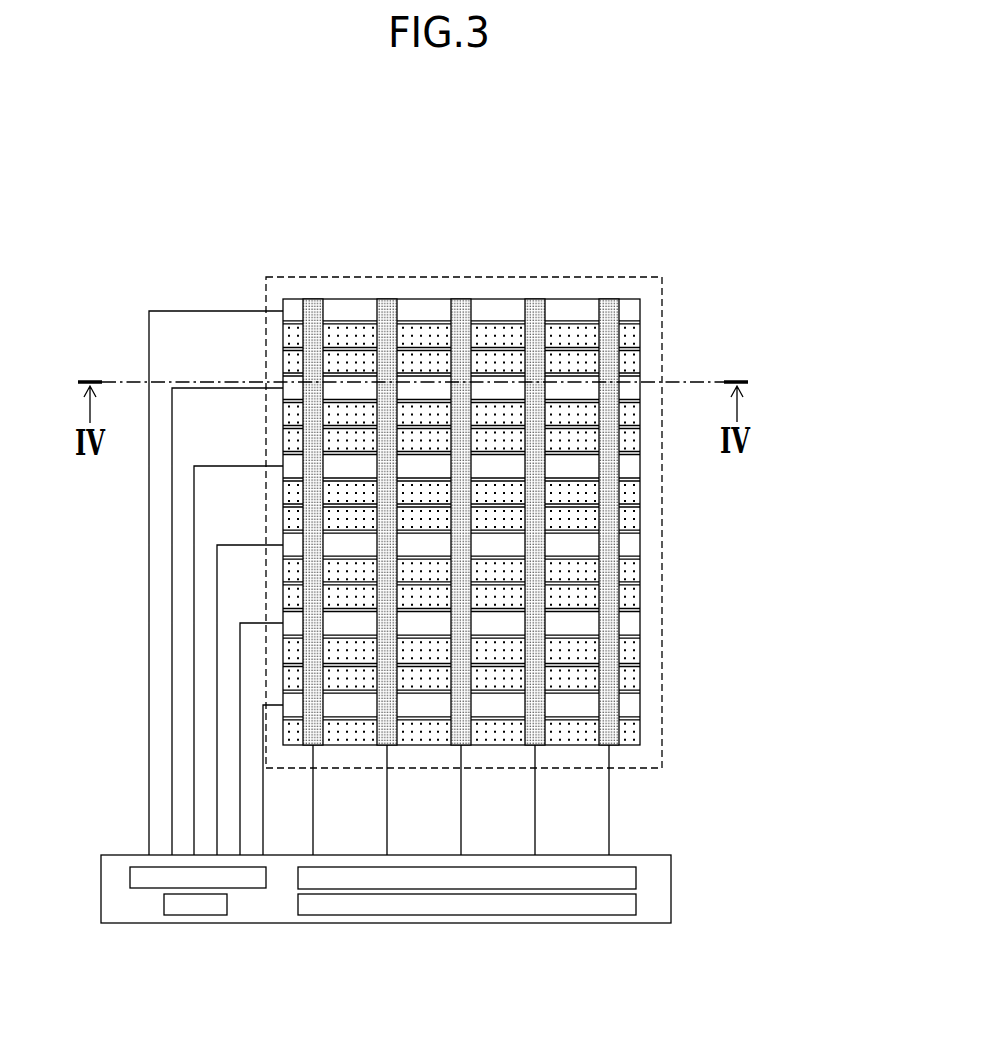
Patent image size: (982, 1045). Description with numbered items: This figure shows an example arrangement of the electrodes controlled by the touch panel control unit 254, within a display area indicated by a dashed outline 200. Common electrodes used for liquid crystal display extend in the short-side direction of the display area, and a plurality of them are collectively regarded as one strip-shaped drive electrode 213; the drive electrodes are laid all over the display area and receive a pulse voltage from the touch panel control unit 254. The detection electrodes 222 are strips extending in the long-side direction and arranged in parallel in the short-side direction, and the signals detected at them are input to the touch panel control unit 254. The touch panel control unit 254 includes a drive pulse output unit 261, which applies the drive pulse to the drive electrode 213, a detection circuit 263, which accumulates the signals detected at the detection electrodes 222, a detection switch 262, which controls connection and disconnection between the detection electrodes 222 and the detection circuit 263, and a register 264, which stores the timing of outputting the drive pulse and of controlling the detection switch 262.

The display device 200 is at (543, 277).
The drive electrode 213 is at (632, 310).
The detection electrode 222 is at (460, 310).
The touch panel control unit 254 is at (652, 893).
The drive pulse output unit 261 is at (251, 883).
The detection switch 262 is at (345, 883).
The detection circuit 263 is at (412, 907).
The register 264 is at (173, 910).